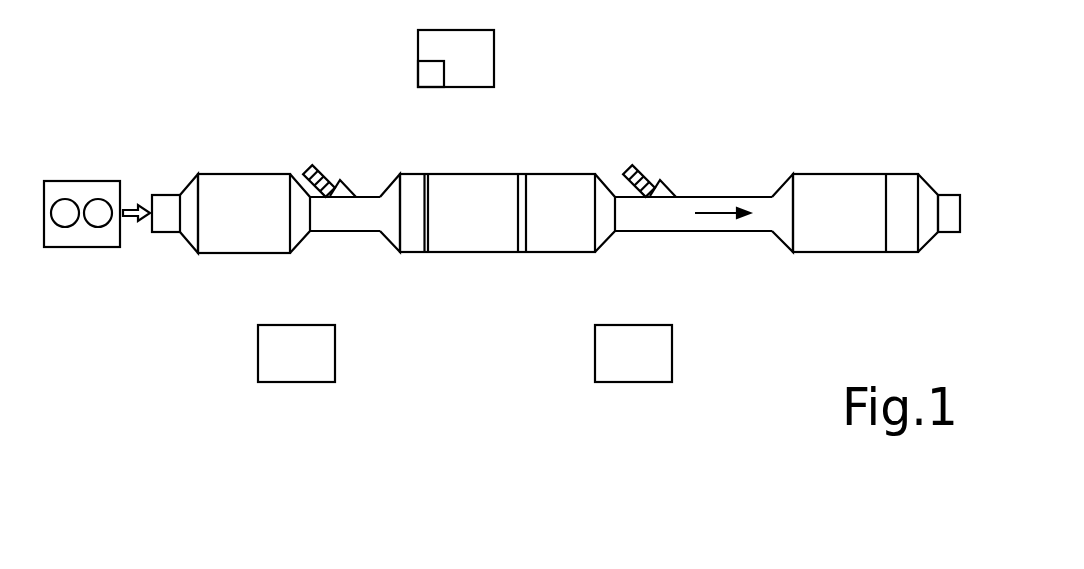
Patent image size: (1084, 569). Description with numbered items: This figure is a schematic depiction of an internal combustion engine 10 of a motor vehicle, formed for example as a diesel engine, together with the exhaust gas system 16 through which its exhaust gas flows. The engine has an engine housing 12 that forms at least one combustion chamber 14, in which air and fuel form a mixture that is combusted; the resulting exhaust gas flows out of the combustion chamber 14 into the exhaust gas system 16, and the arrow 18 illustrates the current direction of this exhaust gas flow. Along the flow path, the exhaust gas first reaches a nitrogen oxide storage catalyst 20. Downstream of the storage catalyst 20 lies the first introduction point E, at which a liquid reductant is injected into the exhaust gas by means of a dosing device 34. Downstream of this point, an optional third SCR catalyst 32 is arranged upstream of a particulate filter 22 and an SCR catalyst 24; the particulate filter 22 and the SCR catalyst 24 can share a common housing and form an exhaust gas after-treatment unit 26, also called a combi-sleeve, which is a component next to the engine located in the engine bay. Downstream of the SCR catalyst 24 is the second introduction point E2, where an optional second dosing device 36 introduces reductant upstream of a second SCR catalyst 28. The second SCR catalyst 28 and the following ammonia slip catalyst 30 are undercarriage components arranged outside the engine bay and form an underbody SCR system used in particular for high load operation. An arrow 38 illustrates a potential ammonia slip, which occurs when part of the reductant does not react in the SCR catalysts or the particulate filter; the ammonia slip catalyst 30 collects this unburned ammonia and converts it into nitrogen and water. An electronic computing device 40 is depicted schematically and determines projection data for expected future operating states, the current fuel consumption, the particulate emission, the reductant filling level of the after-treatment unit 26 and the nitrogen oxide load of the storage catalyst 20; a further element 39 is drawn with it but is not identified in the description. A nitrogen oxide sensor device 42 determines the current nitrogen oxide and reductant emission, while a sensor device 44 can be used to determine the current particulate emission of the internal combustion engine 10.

The internal combustion engine 10 is at (712, 90).
The engine housing 12 is at (82, 181).
The combustion chamber 14 is at (92, 262).
The arrow 18 is at (135, 205).
The nitrogen oxide storage catalyst 20 is at (224, 174).
The first introduction point E is at (327, 247).
The exhaust gas system 16 is at (443, 267).
The third SCR catalyst 32 is at (419, 156).
The particulate filter 22 is at (465, 157).
The SCR catalyst 24 is at (541, 157).
The exhaust gas after-treatment unit 26 is at (549, 267).
The second introduction point E2 is at (657, 223).
The arrow 38 is at (728, 228).
The second SCR catalyst 28 is at (811, 188).
The ammonia slip catalyst 30 is at (903, 188).
The dosing device 34 is at (332, 154).
The second dosing device 36 is at (647, 154).
The electronic computing device 40 is at (494, 58).
The control module 39 is at (430, 71).
The sensor device 44 is at (335, 348).
The nitrogen oxide sensor device 42 is at (672, 348).